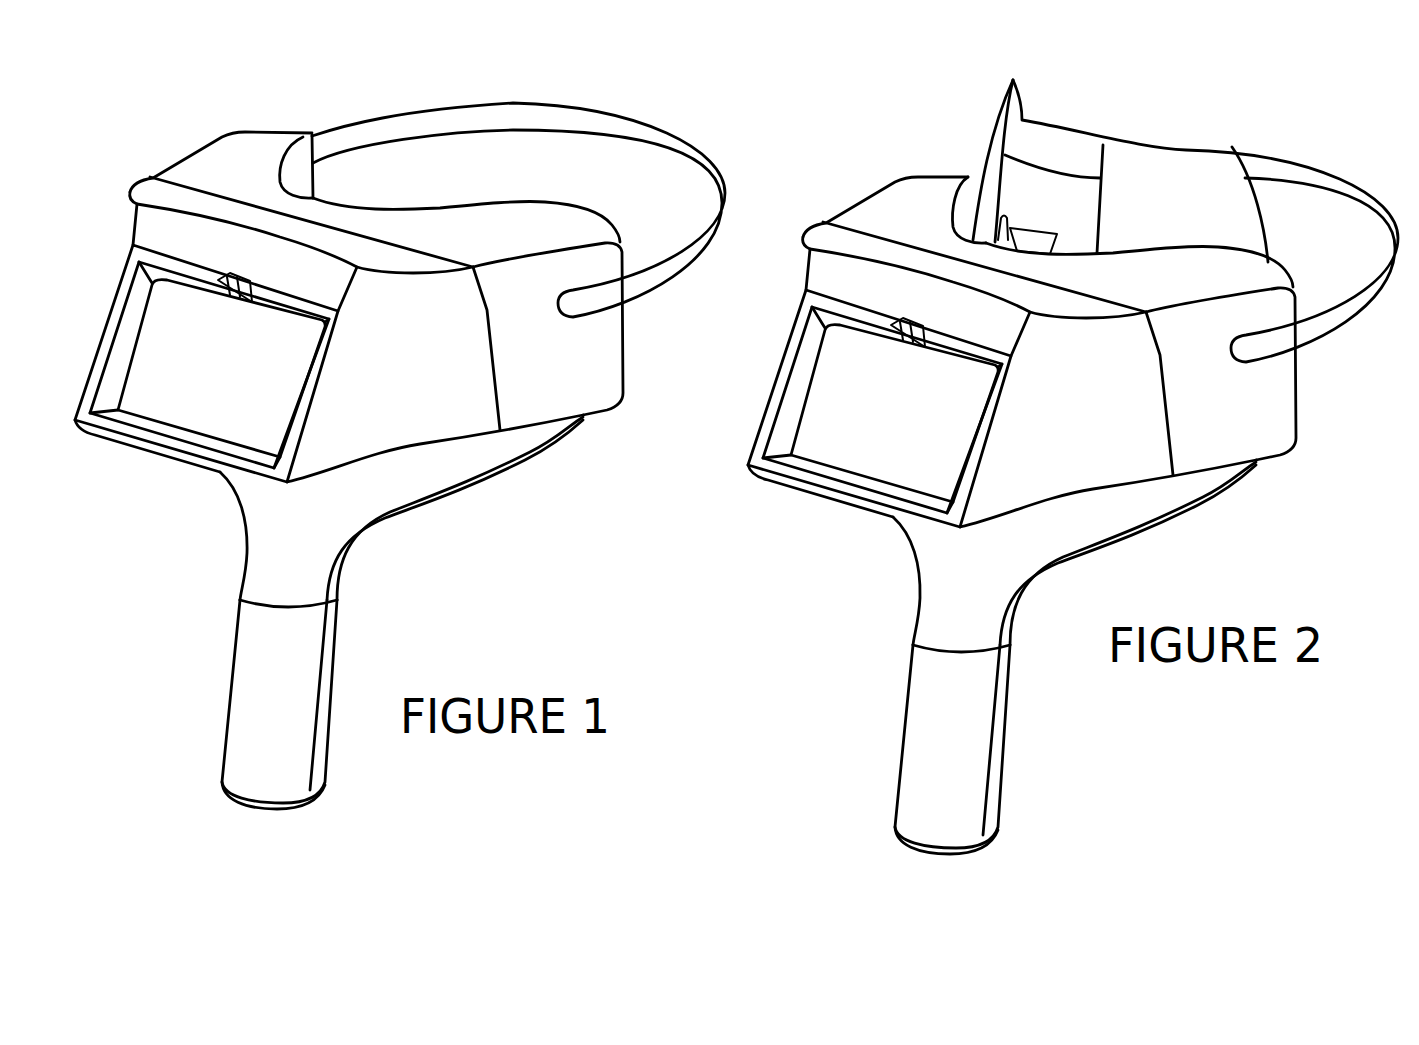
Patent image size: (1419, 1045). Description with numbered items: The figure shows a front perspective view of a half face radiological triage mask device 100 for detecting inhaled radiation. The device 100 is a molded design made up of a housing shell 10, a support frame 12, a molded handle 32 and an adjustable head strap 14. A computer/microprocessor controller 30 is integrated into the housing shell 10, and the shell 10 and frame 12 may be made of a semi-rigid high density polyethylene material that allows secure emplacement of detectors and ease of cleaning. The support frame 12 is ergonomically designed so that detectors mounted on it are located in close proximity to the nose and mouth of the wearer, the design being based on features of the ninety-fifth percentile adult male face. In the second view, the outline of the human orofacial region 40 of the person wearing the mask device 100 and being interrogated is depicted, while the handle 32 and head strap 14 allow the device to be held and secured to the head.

In FIG. 1, the half face radiological triage mask device 100 is at (430, 422).
In FIG. 2, the half face radiological triage mask device 100 is at (1045, 444).
In FIG. 1, the housing shell 10 is at (422, 390).
In FIG. 2, the housing shell 10 is at (1119, 467).
In FIG. 1, the support frame 12 is at (535, 237).
In FIG. 2, the support frame 12 is at (1253, 283).
In FIG. 1, the adjustable head strap 14 is at (508, 118).
In FIG. 2, the adjustable head strap 14 is at (1310, 173).
In FIG. 1, the computer/microprocessor controller 30 is at (183, 350).
In FIG. 2, the computer/microprocessor controller 30 is at (882, 400).
In FIG. 1, the molded handle 32 is at (257, 727).
In FIG. 2, the molded handle 32 is at (964, 763).
In FIG. 2, the human orofacial region 40 is at (1040, 150).